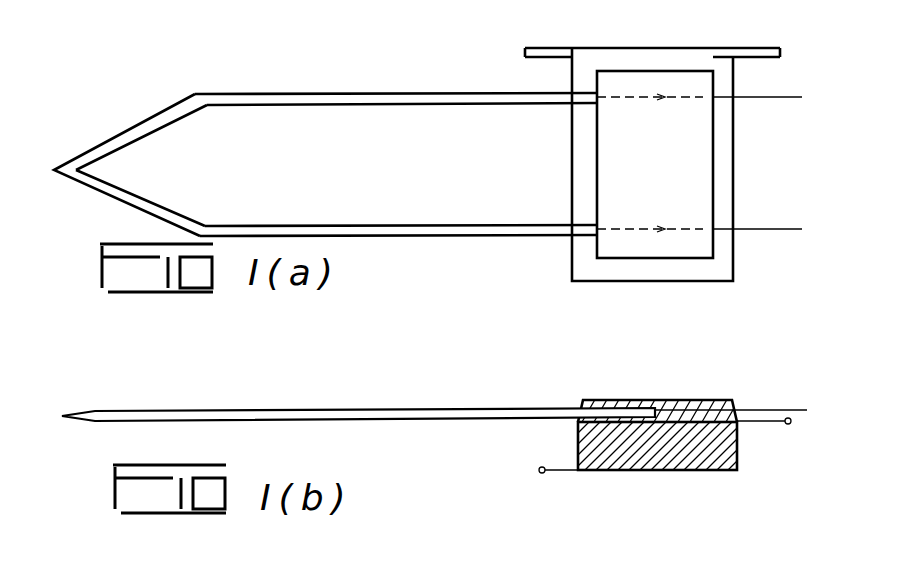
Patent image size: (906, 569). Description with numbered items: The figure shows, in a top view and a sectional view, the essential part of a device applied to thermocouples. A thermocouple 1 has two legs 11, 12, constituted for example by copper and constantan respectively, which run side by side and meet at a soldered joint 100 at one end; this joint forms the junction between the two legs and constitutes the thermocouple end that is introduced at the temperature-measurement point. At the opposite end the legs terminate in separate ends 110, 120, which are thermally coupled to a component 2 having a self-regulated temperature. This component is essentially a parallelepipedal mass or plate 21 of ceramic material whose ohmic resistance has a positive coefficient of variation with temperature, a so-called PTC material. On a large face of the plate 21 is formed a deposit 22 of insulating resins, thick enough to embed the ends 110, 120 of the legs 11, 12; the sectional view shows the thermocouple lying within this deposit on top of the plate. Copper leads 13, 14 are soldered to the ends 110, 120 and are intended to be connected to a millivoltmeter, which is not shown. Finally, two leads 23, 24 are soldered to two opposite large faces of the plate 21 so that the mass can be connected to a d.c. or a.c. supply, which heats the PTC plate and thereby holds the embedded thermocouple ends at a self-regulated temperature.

In FIG. 1A, the thermocouple 1 is at (325, 157).
In FIG. 1B, the thermocouple 1 is at (245, 413).
In FIG. 1A, the soldered joint 100 is at (123, 133).
In FIG. 1A, the leg 11 is at (173, 122).
In FIG. 1A, the leg 12 is at (173, 212).
In FIG. 1A, the separate end 110 is at (618, 100).
In FIG. 1A, the separate end 120 is at (658, 206).
In FIG. 1A, the copper lead 13 is at (762, 99).
In FIG. 1A, the copper lead 14 is at (783, 206).
In FIG. 1A, the component 2 is at (629, 162).
In FIG. 1A, the parallelepipedal plate 21 is at (590, 268).
In FIG. 1B, the parallelepipedal plate 21 is at (727, 447).
In FIG. 1A, the deposit of insulating resins 22 is at (598, 247).
In FIG. 1B, the deposit of insulating resins 22 is at (715, 401).
In FIG. 1A, the lead 23 is at (747, 48).
In FIG. 1B, the lead 23 is at (751, 423).
In FIG. 1A, the lead 24 is at (563, 20).
In FIG. 1B, the lead 24 is at (563, 472).